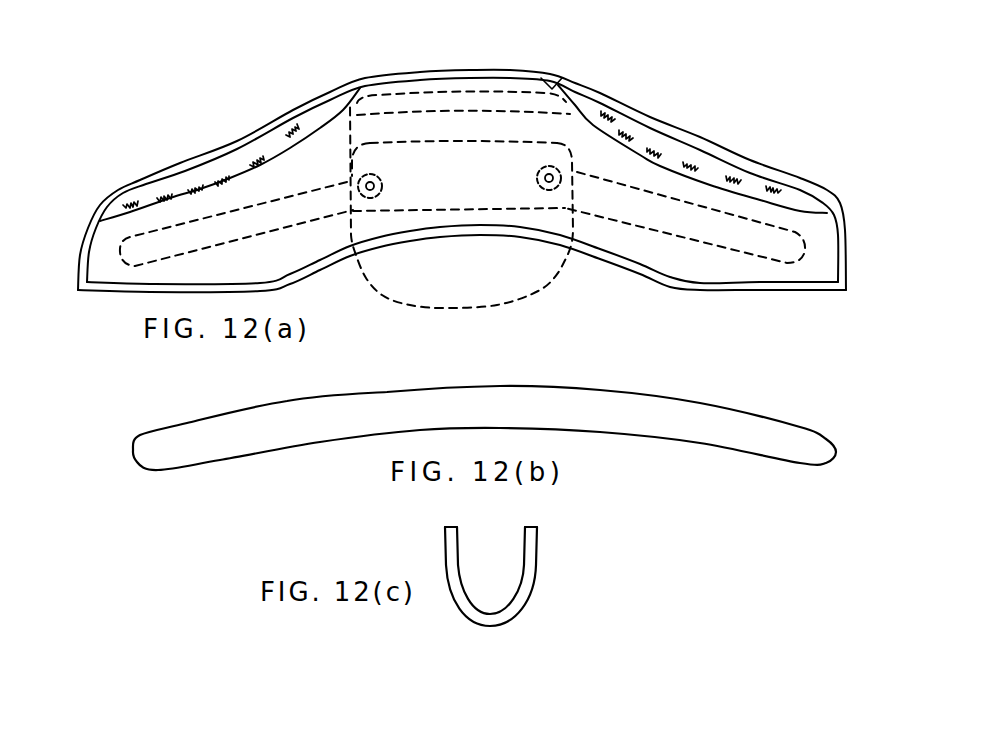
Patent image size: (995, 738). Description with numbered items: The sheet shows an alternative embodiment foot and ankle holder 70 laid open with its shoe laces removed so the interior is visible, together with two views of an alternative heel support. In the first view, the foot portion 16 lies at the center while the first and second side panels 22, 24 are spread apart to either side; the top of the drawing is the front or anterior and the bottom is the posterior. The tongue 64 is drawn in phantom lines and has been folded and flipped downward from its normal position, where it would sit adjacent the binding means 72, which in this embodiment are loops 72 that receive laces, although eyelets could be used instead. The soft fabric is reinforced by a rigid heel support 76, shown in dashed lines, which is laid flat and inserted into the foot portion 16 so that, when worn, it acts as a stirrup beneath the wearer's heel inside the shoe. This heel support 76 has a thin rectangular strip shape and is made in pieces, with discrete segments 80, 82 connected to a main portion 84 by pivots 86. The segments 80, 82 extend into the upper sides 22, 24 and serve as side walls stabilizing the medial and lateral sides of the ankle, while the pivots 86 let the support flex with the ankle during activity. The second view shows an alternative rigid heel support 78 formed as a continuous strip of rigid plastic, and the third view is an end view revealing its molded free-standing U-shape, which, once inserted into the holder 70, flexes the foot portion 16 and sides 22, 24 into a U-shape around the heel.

In FIG. 12A, the foot portion 16 is at (488, 88).
In FIG. 12A, the first side panel 22 is at (113, 273).
In FIG. 12A, the second side panel 24 is at (763, 283).
In FIG. 12A, the tongue 64 is at (405, 93).
In FIG. 12A, the foot and ankle holder 70 is at (197, 163).
In FIG. 12A, the binding means 72 is at (290, 127).
In FIG. 12A, the rigid heel support 76 is at (512, 138).
In FIG. 12B, the rigid heel support 78 is at (293, 452).
In FIG. 12C, the rigid heel support 78 is at (537, 560).
In FIG. 12A, the discrete segment 80 is at (273, 213).
In FIG. 12A, the discrete segment 82 is at (708, 220).
In FIG. 12A, the main portion 84 is at (512, 197).
In FIG. 12A, the pivots 86 is at (560, 158).